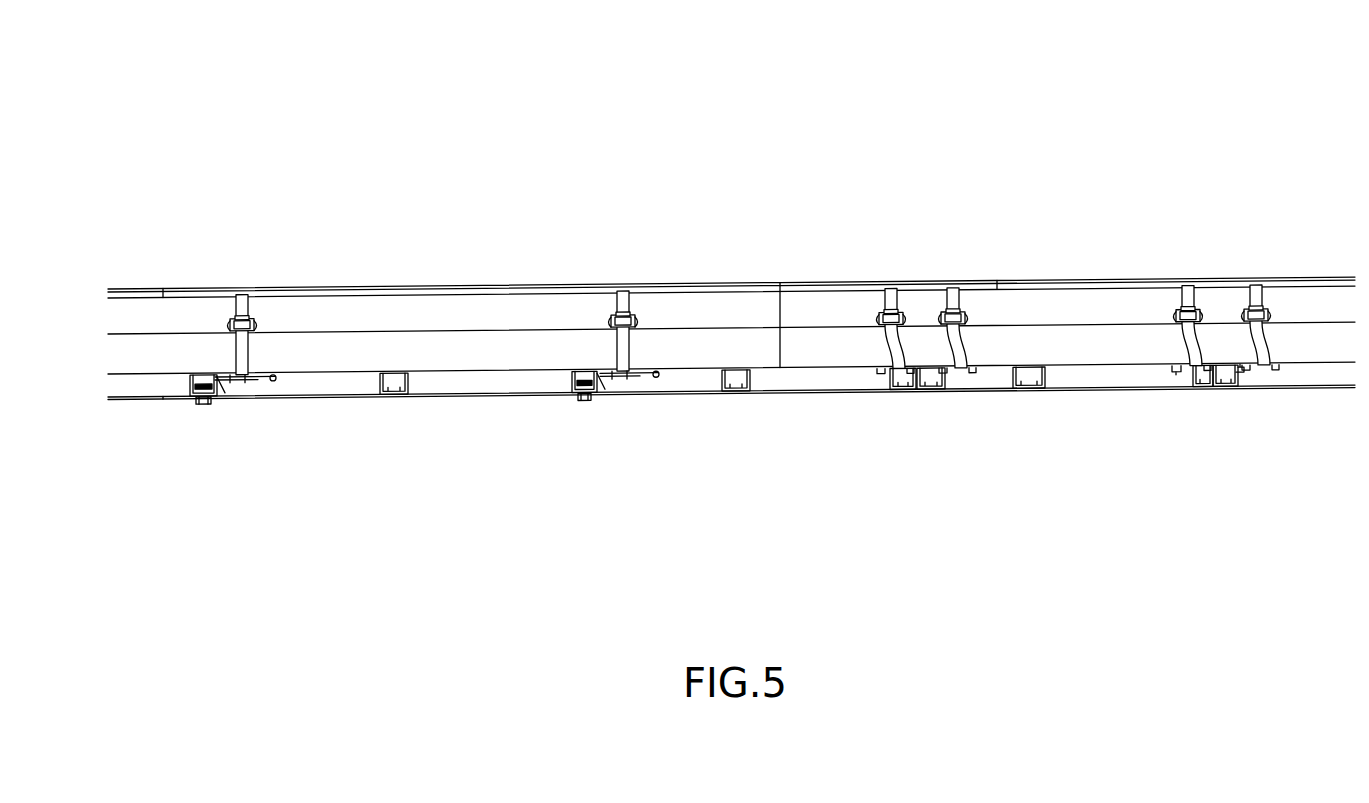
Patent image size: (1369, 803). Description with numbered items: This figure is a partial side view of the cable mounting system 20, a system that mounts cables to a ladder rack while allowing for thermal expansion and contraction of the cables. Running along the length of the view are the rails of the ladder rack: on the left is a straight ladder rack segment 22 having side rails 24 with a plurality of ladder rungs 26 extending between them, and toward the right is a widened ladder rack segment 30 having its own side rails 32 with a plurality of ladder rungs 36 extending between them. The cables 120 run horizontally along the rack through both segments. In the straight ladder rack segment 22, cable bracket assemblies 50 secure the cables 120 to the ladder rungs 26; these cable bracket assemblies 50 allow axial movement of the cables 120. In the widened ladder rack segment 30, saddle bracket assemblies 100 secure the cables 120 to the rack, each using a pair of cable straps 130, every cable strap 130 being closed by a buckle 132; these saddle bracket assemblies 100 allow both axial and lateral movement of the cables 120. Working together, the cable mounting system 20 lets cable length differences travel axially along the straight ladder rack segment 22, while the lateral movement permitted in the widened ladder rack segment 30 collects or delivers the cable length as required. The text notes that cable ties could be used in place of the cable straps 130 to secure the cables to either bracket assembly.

The cable mounting system 20 is at (538, 120).
The straight ladder rack segment 22 is at (333, 287).
The side rail 24 is at (288, 385).
The ladder rung 26 is at (568, 378).
The widened ladder rack segment 30 is at (1153, 280).
The side rail 32 is at (1092, 373).
The ladder rung 36 is at (1233, 372).
The cable bracket assembly 50 is at (613, 407).
The saddle bracket assembly 100 is at (1190, 398).
The cable 120 is at (830, 350).
The cable strap 130 is at (622, 300).
The buckle 132 is at (612, 320).